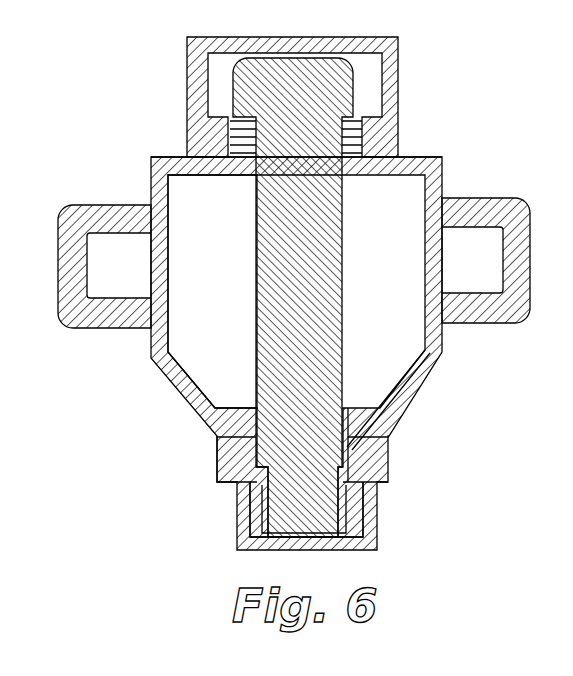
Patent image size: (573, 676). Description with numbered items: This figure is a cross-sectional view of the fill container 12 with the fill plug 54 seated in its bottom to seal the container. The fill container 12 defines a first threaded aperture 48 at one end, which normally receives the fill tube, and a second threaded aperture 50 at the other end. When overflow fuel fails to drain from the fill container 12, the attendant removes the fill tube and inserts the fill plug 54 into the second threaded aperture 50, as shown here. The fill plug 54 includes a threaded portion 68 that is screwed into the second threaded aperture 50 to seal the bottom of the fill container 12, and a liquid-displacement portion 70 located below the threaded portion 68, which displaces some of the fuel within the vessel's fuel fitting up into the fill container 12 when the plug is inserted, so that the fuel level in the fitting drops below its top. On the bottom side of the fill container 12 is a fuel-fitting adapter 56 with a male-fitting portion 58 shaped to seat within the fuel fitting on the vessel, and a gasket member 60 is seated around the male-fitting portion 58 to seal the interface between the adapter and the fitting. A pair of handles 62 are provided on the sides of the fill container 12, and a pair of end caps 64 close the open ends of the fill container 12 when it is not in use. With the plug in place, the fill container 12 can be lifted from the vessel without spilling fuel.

The fill container 12 is at (418, 101).
The first threaded aperture 48 is at (226, 175).
The second threaded aperture 50 is at (258, 428).
The fill plug 54 is at (335, 291).
The fuel-fitting adapter 56 is at (390, 456).
The male-fitting portion 58 is at (374, 495).
The gasket member 60 is at (236, 482).
The handles 62 is at (103, 212).
The end caps 64 is at (187, 78).
The threaded portion 68 is at (348, 404).
The liquid-displacement portion 70 is at (262, 520).